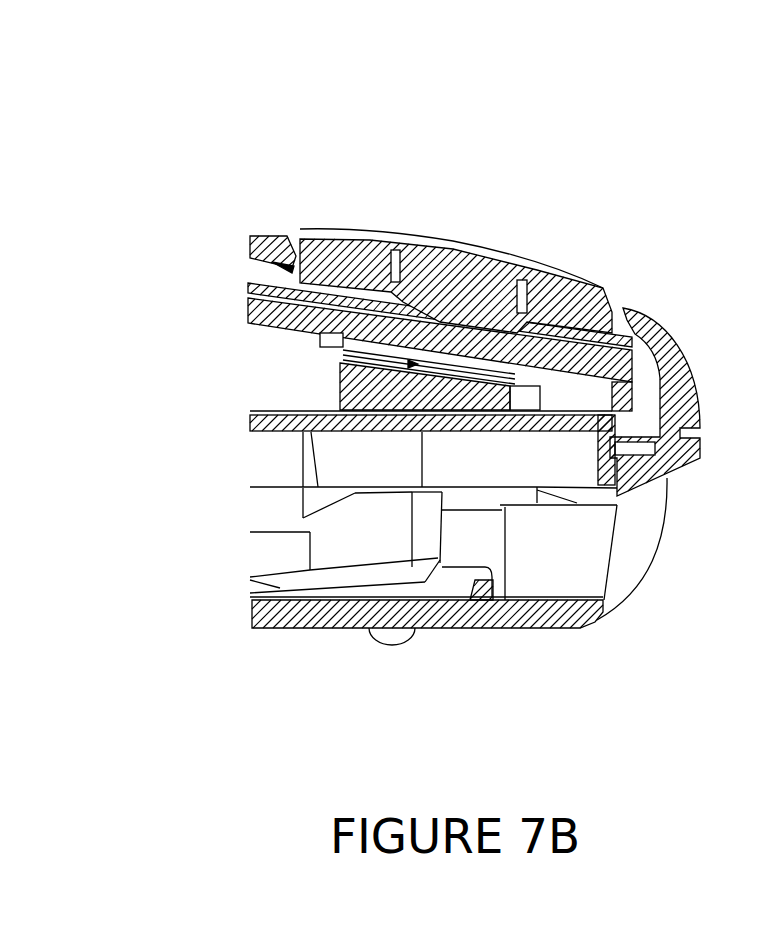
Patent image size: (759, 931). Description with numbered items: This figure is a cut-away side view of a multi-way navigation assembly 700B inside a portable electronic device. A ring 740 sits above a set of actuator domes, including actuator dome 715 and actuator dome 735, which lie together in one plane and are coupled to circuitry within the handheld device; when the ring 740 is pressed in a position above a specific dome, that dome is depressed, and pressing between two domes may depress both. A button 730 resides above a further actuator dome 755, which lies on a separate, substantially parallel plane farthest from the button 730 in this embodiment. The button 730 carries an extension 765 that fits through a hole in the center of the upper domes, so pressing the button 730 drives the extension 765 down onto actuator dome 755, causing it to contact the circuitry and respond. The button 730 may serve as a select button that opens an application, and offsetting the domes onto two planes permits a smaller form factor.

The multi-way navigation assembly 700B is at (92, 41).
The actuator dome 715 is at (267, 263).
The button 730 is at (453, 238).
The actuator dome 735 is at (276, 287).
The ring 740 is at (546, 250).
The actuator dome 755 is at (340, 378).
The extension 765 is at (395, 345).